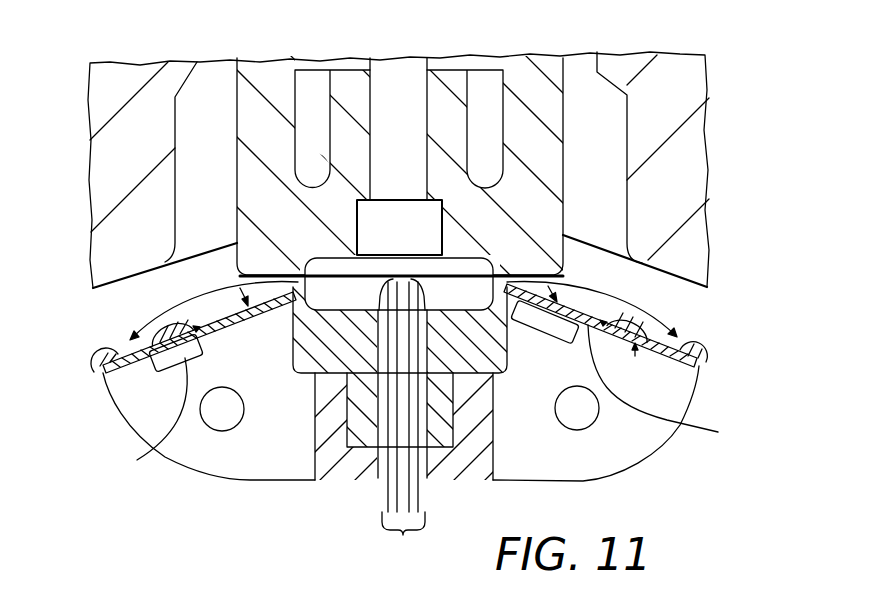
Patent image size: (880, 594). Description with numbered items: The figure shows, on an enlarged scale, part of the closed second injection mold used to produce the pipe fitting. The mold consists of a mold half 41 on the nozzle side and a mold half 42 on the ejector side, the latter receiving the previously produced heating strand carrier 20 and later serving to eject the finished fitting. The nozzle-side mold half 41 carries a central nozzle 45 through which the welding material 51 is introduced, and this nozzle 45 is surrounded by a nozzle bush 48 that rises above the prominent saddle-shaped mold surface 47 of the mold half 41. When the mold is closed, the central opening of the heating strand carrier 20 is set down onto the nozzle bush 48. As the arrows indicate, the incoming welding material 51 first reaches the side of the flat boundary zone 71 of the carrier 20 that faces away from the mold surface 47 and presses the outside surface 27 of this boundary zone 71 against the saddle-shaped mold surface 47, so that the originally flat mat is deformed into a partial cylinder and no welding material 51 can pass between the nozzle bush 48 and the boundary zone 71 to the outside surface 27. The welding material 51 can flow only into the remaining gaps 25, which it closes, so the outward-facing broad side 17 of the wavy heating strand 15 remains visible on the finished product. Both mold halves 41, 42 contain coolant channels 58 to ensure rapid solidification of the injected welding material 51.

The heating strand 15 is at (150, 422).
The outward-facing broad side of the heating strand 17 is at (127, 375).
The heating strand carrier 20 is at (703, 364).
The remaining gaps 25 is at (675, 389).
The outside surface of the boundary zone 27 is at (637, 350).
The mold half on the nozzle side 41 is at (617, 438).
The mold half on the ejector side 42 is at (685, 155).
The nozzle 45 is at (384, 412).
The saddle-shaped mold surface 47 is at (655, 305).
The nozzle bush 48 is at (297, 307).
The welding material 51 is at (403, 535).
The coolant channels 58 is at (225, 418).
The flat boundary zone 71 is at (540, 330).